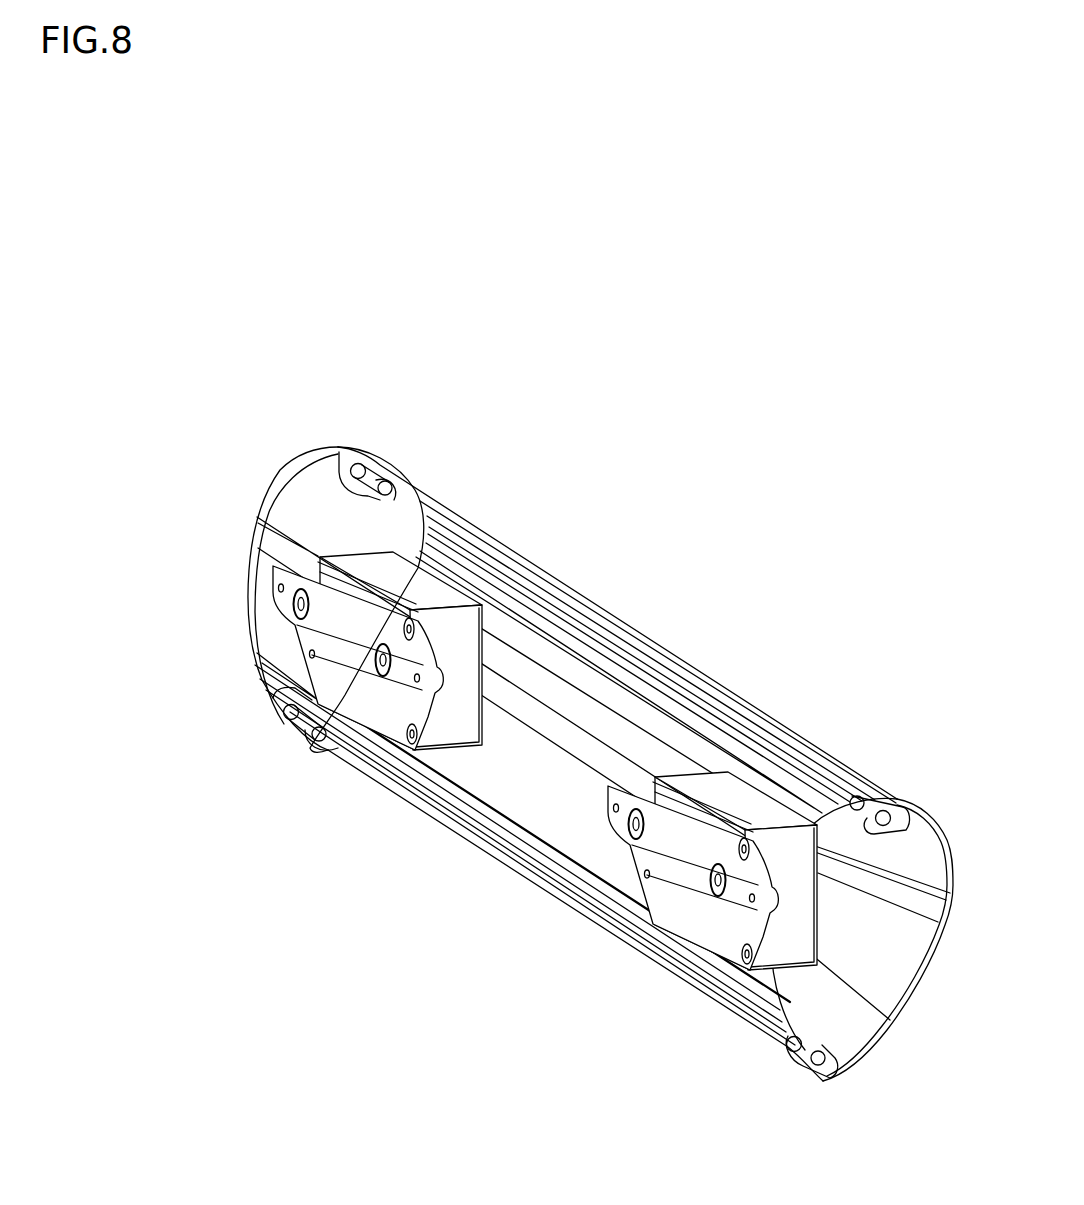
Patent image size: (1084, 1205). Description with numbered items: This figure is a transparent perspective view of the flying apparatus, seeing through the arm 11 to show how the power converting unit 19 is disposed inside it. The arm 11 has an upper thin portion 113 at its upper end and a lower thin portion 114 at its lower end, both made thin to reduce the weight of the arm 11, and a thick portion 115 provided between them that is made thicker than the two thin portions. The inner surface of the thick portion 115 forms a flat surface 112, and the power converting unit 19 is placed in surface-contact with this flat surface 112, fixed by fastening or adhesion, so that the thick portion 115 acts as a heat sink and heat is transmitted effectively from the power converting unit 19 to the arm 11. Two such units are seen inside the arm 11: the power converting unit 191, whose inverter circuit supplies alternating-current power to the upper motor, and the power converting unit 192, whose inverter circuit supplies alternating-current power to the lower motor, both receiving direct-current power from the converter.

The arm 11 is at (528, 735).
The flat surface 112 is at (262, 585).
The upper thin portion 113 is at (228, 452).
The lower thin portion 114 is at (478, 851).
The thick portion 115 is at (228, 560).
The power converting unit 19 is at (545, 704).
The power converting unit 191 is at (430, 573).
The power converting unit 192 is at (757, 780).